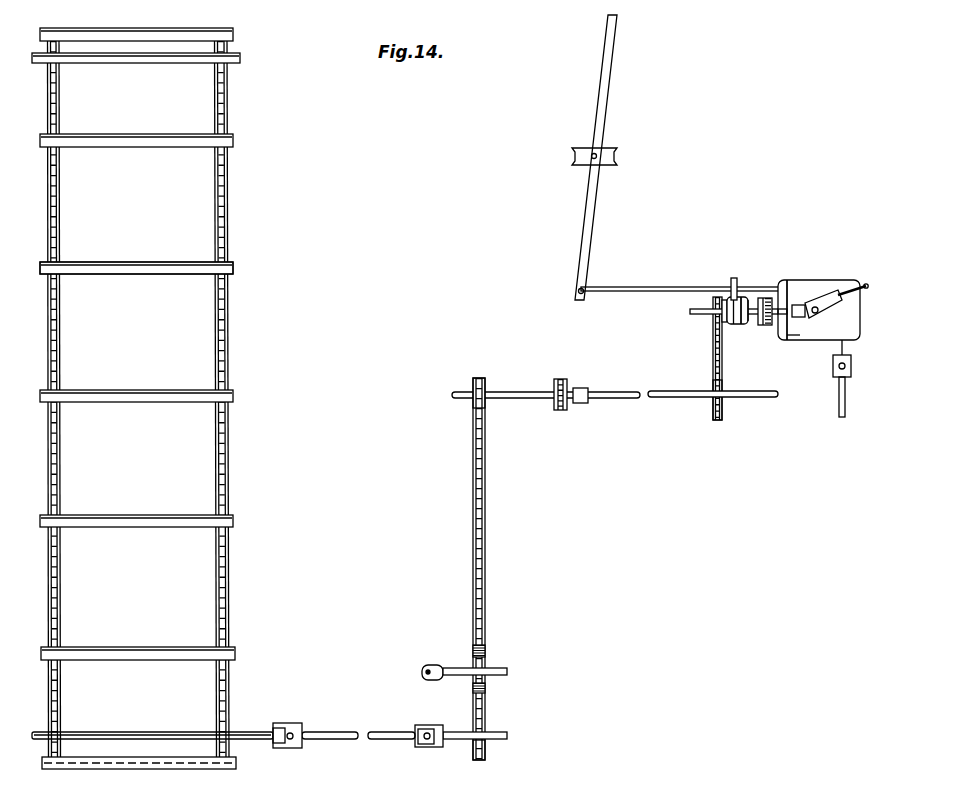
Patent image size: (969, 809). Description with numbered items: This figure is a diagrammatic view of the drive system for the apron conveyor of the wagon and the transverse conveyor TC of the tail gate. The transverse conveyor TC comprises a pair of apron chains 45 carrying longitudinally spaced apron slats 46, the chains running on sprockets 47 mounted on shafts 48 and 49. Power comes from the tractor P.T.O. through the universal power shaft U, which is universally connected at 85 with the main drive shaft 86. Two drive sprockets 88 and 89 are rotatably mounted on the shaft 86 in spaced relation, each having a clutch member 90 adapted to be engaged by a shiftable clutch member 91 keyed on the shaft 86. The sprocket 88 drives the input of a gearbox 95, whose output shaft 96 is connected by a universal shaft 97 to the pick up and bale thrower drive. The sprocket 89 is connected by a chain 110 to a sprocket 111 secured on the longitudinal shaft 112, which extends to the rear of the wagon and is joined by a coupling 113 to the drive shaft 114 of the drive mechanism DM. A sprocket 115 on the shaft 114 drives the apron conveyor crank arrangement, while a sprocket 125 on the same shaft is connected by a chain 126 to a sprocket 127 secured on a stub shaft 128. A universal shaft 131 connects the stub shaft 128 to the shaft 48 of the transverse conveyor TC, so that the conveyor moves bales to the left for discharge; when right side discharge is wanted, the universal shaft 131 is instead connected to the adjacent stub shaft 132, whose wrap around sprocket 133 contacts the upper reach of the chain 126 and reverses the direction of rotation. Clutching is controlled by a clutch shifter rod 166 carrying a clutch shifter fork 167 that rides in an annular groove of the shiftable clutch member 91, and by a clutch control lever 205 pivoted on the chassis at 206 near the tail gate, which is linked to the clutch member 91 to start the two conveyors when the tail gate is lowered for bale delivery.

The apron chains 45 is at (214, 480).
The apron slats 46 is at (105, 390).
The sprockets 47 is at (218, 75).
The shaft 48 is at (150, 720).
The shaft 49 is at (113, 65).
The transverse conveyor TC is at (232, 330).
The drive mechanism DM is at (750, 414).
The universal power shaft U is at (866, 280).
The universal connection 85 is at (813, 303).
The main drive shaft 86 is at (792, 340).
The drive sprocket 88 is at (768, 326).
The drive sprocket 89 is at (722, 300).
The clutch member 90 is at (731, 297).
The shiftable clutch member 91 is at (745, 297).
The gearbox 95 is at (860, 326).
The output shaft 96 is at (850, 350).
The universal shaft 97 is at (845, 410).
The chain 110 is at (712, 345).
The sprocket 111 is at (718, 420).
The longitudinal shaft 112 is at (670, 398).
The coupling 113 is at (582, 404).
The drive shaft 114 is at (517, 400).
The sprocket 115 is at (563, 380).
The sprocket 125 is at (479, 378).
The chain 126 is at (488, 525).
The sprocket 127 is at (480, 762).
The stub shaft 128 is at (498, 736).
The universal shaft 131 is at (394, 741).
The stub shaft 132 is at (497, 668).
The wrap around sprocket 133 is at (482, 652).
The clutch shifter rod 166 is at (628, 290).
The clutch shifter fork 167 is at (735, 278).
The clutch control lever 205 is at (607, 93).
The pivot 206 is at (592, 158).